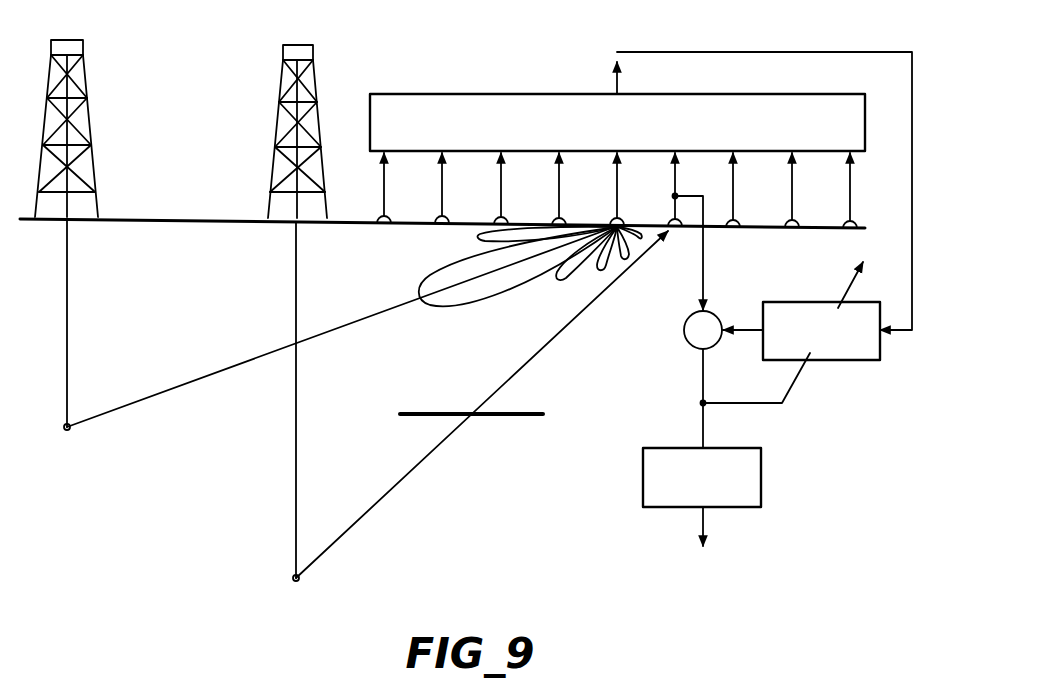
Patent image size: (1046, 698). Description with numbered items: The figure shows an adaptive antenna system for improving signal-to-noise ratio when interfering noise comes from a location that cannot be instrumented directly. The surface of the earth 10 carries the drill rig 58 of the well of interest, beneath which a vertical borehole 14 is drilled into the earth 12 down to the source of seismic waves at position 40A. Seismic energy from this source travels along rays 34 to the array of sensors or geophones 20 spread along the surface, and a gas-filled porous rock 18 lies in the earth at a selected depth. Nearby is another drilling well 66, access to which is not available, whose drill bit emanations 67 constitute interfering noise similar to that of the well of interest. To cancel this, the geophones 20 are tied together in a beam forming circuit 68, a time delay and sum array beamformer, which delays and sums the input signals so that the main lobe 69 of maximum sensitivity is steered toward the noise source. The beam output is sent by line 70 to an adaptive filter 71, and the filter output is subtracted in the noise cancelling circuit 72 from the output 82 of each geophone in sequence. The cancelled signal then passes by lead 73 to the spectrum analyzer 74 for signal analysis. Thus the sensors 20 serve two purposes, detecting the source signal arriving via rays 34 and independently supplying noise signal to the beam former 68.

The surface of the earth 10 is at (188, 218).
The earth 12 is at (180, 292).
The vertical borehole 14 is at (299, 283).
The gas-filled porous rock 18 is at (517, 417).
The array of sensors or geophones 20 is at (374, 202).
The rays 34 is at (398, 488).
The source of seismic waves at position A 40A is at (300, 582).
The drill rig 58 is at (280, 78).
The another drilling well 66 is at (89, 124).
The drill bit emanations 67 is at (120, 408).
The beam forming circuit 68 is at (478, 94).
The main lobe 69 is at (478, 305).
The line 70 is at (750, 52).
The adaptive filter 71 is at (848, 364).
The noise cancelling circuit 72 is at (686, 344).
The lead 73 is at (702, 419).
The spectrum analyzer 74 is at (762, 480).
The output of the geophones 82 is at (710, 268).